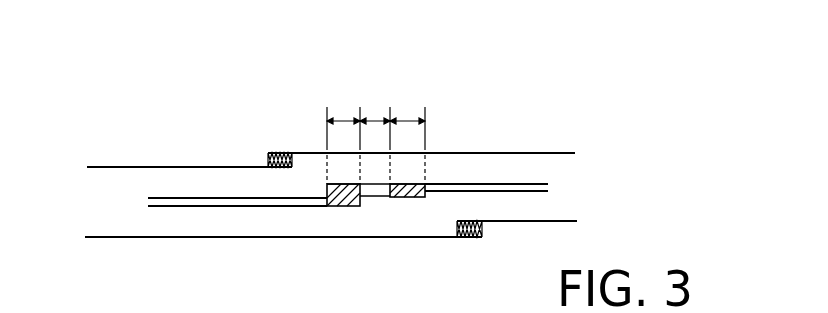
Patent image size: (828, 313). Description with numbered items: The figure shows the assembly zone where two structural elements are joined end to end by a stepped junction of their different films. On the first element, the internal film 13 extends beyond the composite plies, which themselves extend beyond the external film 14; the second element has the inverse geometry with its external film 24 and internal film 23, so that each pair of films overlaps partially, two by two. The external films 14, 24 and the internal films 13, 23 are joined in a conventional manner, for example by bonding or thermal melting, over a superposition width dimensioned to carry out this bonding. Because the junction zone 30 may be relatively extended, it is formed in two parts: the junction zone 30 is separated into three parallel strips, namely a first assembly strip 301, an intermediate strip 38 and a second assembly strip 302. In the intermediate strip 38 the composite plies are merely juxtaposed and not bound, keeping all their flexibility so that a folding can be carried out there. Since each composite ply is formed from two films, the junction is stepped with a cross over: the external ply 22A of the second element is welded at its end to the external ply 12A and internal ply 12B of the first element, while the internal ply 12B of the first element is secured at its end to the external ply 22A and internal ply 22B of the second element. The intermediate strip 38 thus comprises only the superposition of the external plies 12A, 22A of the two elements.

The external film 14 is at (97, 167).
The external film 24 is at (547, 152).
The external ply 12A is at (148, 198).
The internal ply 12B is at (140, 207).
The internal film 13 is at (95, 237).
The internal film 23 is at (575, 221).
The external ply 22A is at (548, 184).
The internal ply 22B is at (548, 191).
The junction zone 30 is at (424, 37).
The first assembly strip 301 is at (339, 133).
The second assembly strip 302 is at (409, 129).
The intermediate strip 38 is at (375, 105).